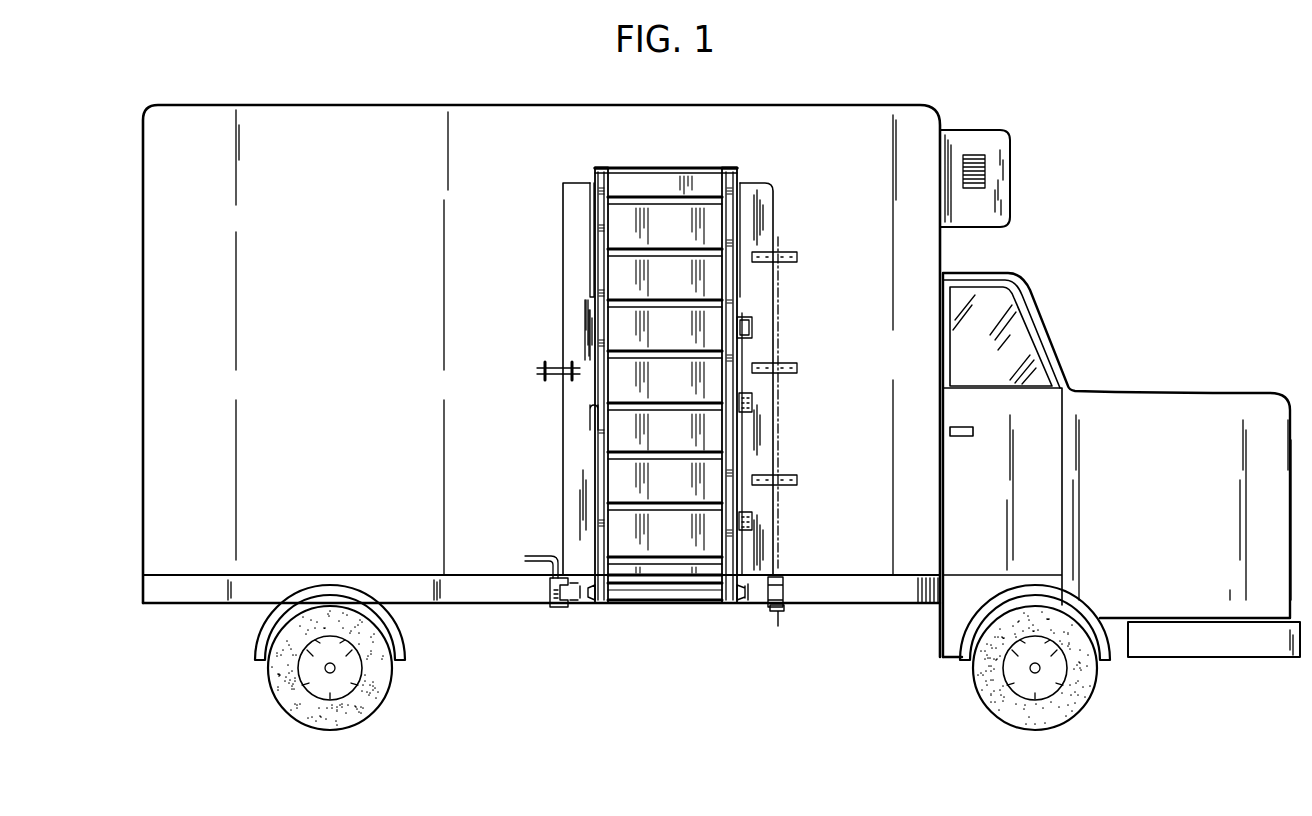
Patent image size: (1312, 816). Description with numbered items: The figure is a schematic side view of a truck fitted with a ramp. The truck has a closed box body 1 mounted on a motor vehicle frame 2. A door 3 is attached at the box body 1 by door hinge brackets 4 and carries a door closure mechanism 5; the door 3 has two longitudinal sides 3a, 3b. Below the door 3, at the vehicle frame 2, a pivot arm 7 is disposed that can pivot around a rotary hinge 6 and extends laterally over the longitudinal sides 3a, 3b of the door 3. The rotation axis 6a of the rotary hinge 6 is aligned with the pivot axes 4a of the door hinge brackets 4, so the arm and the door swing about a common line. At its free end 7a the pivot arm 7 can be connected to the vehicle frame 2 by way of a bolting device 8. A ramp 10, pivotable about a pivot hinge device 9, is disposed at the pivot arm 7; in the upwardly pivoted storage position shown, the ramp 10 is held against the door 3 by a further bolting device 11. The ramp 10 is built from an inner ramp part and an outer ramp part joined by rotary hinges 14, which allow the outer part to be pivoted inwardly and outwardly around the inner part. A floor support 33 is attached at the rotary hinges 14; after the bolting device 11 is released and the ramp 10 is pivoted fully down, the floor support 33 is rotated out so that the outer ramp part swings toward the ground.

The box body 1 is at (366, 416).
The motor vehicle frame 2 is at (433, 597).
The door 3 is at (584, 490).
The longitudinal side of the door 3a is at (563, 278).
The longitudinal side of the door 3b is at (775, 310).
The floor support 33 is at (597, 243).
The door hinge brackets 4 is at (790, 482).
The pivot axes of the door hinge brackets 4a is at (791, 530).
The door closure mechanism 5 is at (538, 377).
The rotary hinge 6 is at (788, 590).
The rotation axis of the rotary hinge 6a is at (781, 621).
The pivot arm 7 is at (758, 600).
The free end of the pivot arm 7a is at (591, 600).
The bolting device 8 is at (542, 590).
The pivot hinge device 9 is at (663, 601).
The ramp 10 is at (586, 332).
The bolting device 11 is at (748, 347).
The rotary hinges 14 is at (596, 172).